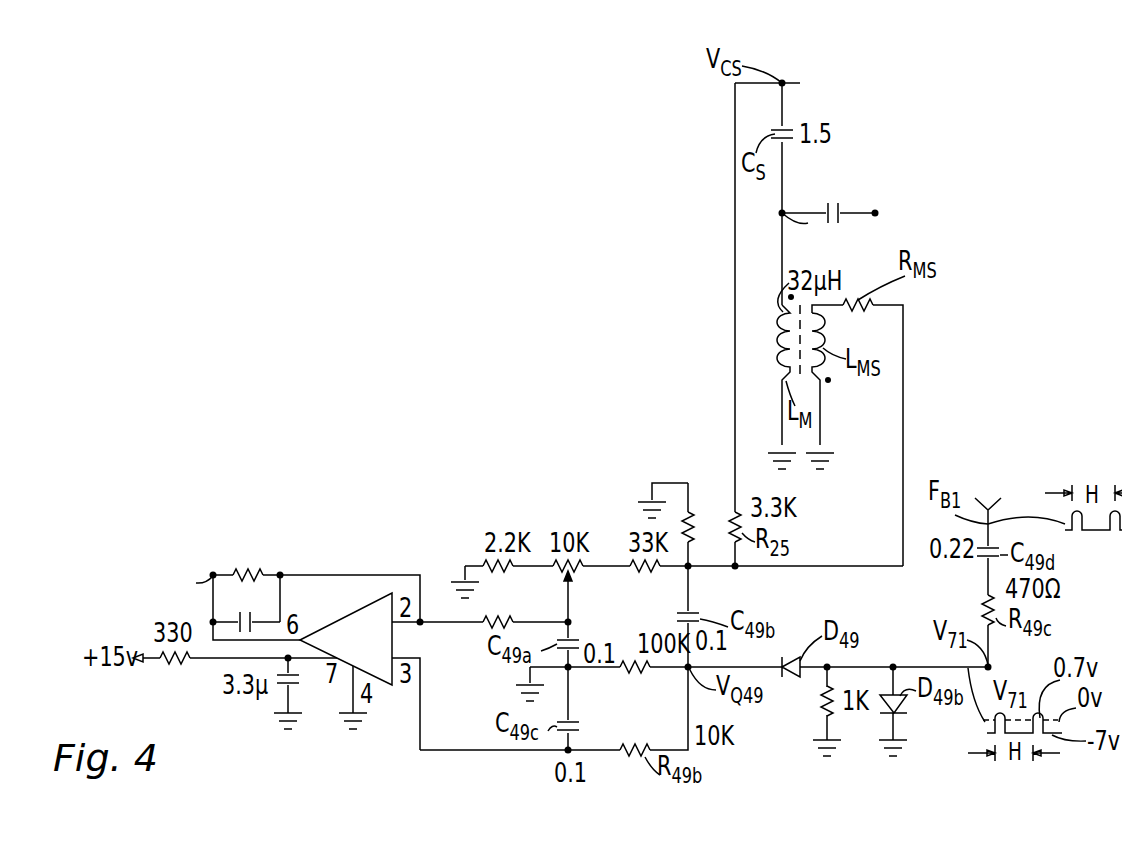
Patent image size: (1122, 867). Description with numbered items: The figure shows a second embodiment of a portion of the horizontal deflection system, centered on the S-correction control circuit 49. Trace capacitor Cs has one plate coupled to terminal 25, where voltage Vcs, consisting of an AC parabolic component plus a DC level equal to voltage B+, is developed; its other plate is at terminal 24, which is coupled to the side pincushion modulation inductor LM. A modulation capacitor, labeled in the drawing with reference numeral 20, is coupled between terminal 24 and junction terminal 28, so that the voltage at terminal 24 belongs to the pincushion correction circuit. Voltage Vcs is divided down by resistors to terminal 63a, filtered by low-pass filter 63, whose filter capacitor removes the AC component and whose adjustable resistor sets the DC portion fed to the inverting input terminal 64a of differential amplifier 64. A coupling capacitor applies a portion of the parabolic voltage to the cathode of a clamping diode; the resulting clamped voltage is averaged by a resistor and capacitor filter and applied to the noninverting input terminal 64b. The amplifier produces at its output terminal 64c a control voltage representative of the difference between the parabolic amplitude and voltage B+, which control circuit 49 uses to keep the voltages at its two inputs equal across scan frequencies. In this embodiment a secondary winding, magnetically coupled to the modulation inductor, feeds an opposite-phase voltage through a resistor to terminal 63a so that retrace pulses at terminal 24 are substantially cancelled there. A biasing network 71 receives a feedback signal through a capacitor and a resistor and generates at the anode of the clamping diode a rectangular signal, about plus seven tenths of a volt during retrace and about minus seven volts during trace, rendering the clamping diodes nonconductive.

The sensing capacitor CSM 20 is at (833, 203).
The terminal 24 is at (782, 213).
The terminal 25 is at (782, 84).
The junction terminal 28 is at (875, 213).
The control circuit 49 is at (463, 668).
The low-pass filter 63 is at (622, 601).
The terminal 63a is at (690, 571).
The differential amplifier 64 is at (352, 613).
The inverting input terminal 64a is at (393, 606).
The noninverting input terminal 64b is at (393, 672).
The output terminal 64c is at (213, 575).
The biasing network 71 is at (696, 525).